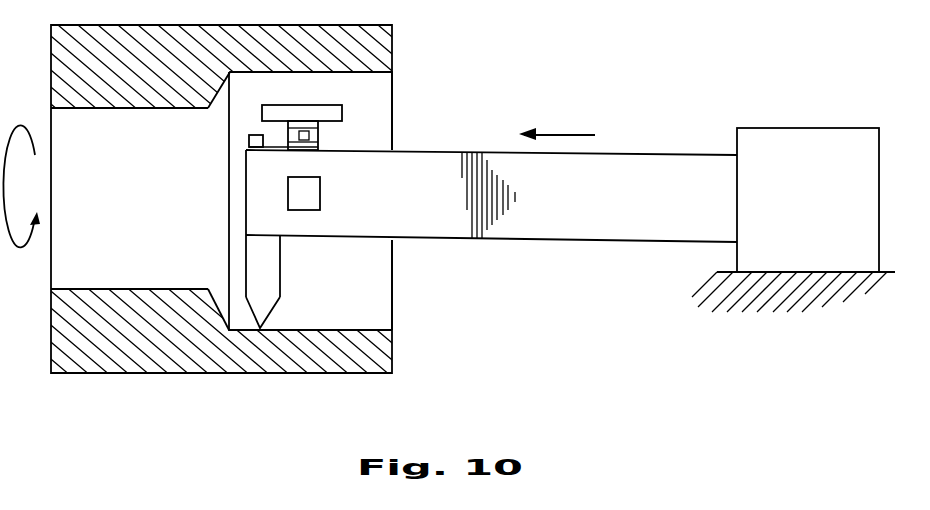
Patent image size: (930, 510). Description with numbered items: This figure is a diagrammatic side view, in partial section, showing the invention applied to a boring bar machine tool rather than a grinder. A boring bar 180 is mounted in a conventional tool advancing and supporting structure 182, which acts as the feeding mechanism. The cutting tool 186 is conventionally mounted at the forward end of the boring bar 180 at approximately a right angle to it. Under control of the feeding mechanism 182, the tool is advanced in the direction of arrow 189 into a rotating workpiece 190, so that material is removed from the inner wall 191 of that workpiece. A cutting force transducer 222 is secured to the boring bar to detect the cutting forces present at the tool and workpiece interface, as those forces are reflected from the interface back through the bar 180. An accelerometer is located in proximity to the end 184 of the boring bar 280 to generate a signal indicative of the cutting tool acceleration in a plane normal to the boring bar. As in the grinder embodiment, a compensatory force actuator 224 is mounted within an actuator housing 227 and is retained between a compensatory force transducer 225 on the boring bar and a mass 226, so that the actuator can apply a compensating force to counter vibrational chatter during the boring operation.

The boring bar 180 is at (577, 242).
The tool advancing and supporting structure 182 is at (766, 140).
The end of the boring bar 184 is at (245, 192).
The cutting tool 186 is at (275, 277).
The arrow 189 is at (558, 135).
The rotating workpiece 190 is at (192, 373).
The inner wall 191 is at (365, 330).
The cutting force transducer 222 is at (320, 196).
The compensatory force actuator 224 is at (362, 133).
The compensatory force transducer 225 is at (318, 144).
The mass 226 is at (290, 88).
The actuator housing 227 is at (307, 134).
The boring bar 280 is at (248, 138).